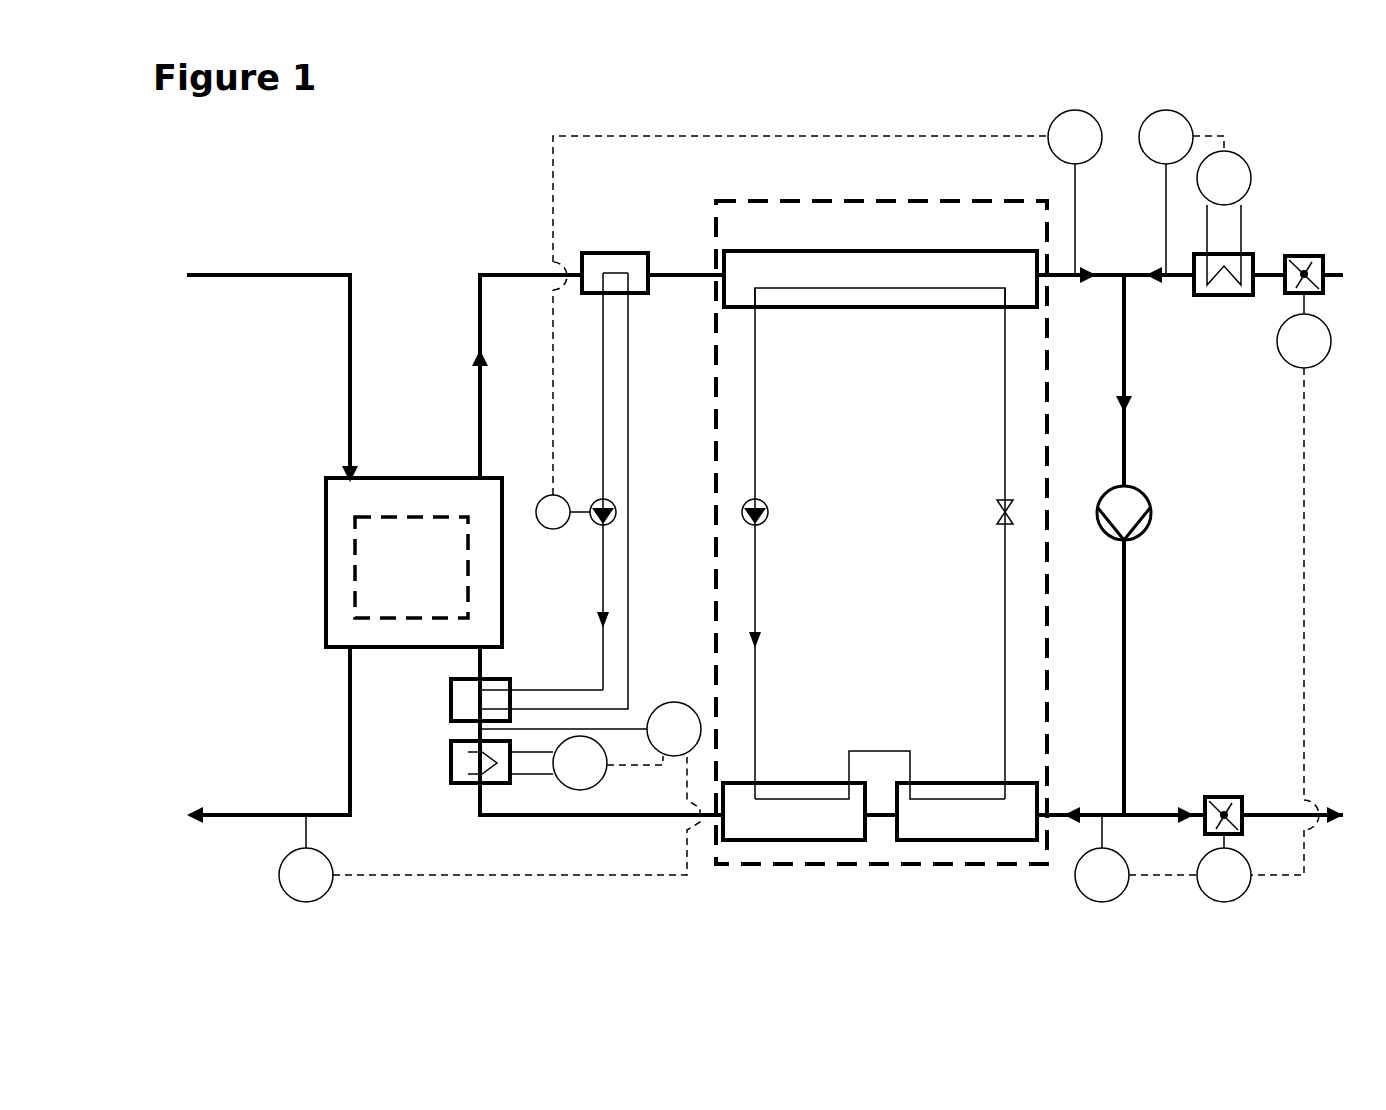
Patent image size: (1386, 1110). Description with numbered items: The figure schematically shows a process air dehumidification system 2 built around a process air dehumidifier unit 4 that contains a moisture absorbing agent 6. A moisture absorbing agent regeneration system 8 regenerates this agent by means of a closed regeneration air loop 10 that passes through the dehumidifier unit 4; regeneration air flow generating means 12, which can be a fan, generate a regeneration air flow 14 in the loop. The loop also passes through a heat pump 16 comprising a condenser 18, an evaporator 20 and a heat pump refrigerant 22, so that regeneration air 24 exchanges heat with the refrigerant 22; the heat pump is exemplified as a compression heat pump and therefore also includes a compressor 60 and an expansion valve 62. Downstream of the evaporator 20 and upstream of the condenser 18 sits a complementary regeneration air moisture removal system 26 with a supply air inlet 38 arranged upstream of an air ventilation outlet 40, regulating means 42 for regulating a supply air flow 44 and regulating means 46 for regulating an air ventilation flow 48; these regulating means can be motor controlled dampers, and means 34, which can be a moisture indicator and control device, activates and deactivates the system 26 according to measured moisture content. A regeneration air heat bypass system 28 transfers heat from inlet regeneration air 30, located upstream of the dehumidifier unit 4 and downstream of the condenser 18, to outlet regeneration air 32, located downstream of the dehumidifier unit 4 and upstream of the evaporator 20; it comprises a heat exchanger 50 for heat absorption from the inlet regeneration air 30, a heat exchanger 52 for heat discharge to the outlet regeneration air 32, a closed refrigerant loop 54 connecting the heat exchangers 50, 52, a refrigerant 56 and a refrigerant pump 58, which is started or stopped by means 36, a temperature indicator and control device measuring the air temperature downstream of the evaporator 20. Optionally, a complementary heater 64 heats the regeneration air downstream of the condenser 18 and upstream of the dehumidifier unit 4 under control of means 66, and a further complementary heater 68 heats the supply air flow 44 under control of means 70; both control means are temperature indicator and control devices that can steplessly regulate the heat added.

The process air dehumidification system 2 is at (434, 236).
The process air dehumidifier unit 4 is at (326, 528).
The moisture absorbing agent 6 is at (360, 582).
The moisture absorbing agent regeneration system 8 is at (715, 878).
The closed regeneration air loop 10 is at (628, 818).
The regeneration air flow generating means 12 is at (1150, 516).
The regeneration air flow 14 is at (480, 412).
The heat pump 16 is at (992, 868).
The condenser 18 is at (812, 845).
The evaporator 20 is at (968, 268).
The heat pump refrigerant 22 is at (880, 752).
The regeneration air 24 is at (672, 818).
The complementary regeneration air moisture removal system 26 is at (1188, 888).
The regeneration air heat bypass system 28 is at (602, 360).
The inlet regeneration air 30 is at (478, 730).
The outlet regeneration air 32 is at (510, 274).
The means arranged to activate and deactivate the complementary regeneration air moi 34 is at (1095, 882).
The means arranged to activate and deactivate the regeneration air heat bypass syste 36 is at (1090, 117).
The supply air inlet 38 is at (1124, 272).
The air ventilation outlet 40 is at (1128, 800).
The regulating means 42 is at (1312, 262).
The supply air flow 44 is at (1178, 283).
The regulating means 46 is at (1232, 798).
The air ventilation flow 48 is at (1182, 802).
The heat exchanger 50 is at (460, 693).
The heat exchanger 52 is at (640, 253).
The closed refrigerant loop 54 is at (603, 322).
The refrigerant 56 is at (603, 379).
The refrigerant pump 58 is at (600, 498).
The compressor 60 is at (770, 512).
The expansion valve 62 is at (997, 504).
The complementary heater 64 is at (470, 765).
The means arranged to activate and deactivate the complementary heater 66 is at (680, 703).
The further complementary heater 68 is at (1248, 262).
The means arranged to activate and deactivate the further complementary heater 70 is at (1181, 117).